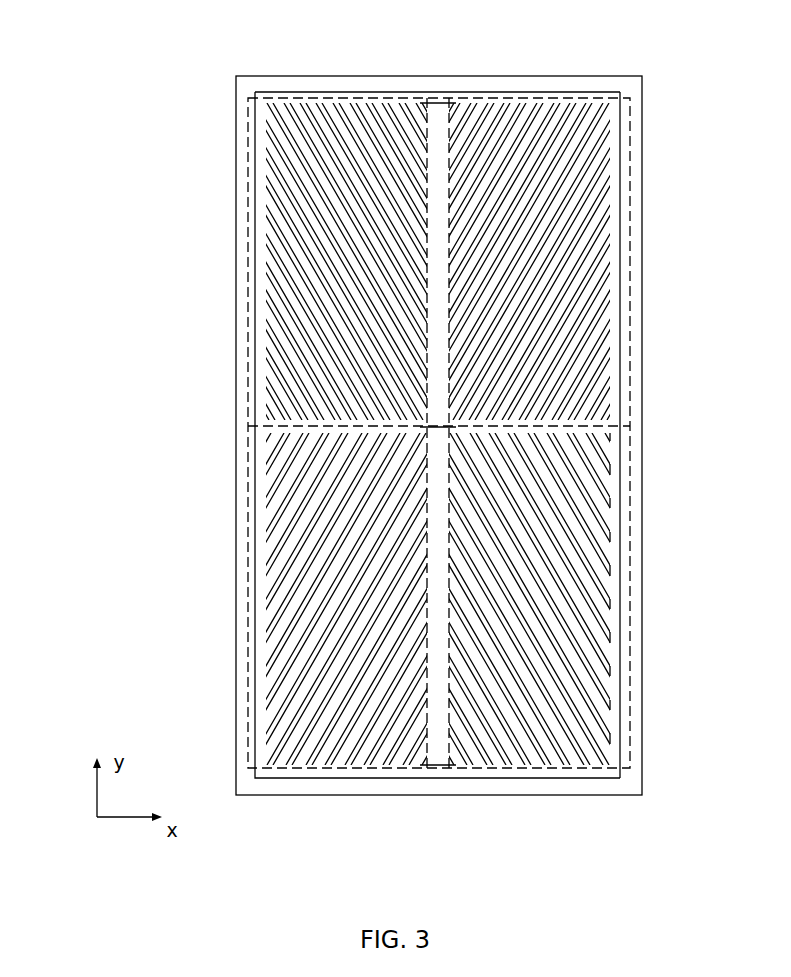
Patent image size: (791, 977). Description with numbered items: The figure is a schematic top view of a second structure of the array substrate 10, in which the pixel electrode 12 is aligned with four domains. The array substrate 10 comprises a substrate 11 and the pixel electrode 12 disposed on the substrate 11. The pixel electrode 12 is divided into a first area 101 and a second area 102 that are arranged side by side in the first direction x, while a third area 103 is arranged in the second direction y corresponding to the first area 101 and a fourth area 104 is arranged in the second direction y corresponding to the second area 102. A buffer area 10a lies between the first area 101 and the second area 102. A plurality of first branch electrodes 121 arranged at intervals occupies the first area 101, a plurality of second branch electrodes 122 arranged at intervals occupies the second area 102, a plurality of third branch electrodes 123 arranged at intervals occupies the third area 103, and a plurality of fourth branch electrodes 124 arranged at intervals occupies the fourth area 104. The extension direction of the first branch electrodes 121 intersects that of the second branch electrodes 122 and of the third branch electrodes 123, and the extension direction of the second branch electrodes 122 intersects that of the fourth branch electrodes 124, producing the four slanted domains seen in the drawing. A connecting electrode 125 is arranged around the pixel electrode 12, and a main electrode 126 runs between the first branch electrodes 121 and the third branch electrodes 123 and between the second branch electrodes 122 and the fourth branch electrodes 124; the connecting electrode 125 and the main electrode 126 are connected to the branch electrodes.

The array substrate 10 is at (178, 60).
The buffer area 10a is at (430, 427).
The substrate 11 is at (633, 360).
The pixel electrode 12 is at (483, 46).
The first branch electrodes 121 is at (405, 105).
The second branch electrodes 122 is at (482, 107).
The third branch electrodes 123 is at (397, 764).
The fourth branch electrodes 124 is at (468, 766).
The connecting electrode 125 is at (610, 514).
The main electrode 126 is at (577, 420).
The first area 101 is at (250, 262).
The second area 102 is at (628, 268).
The third area 103 is at (244, 658).
The fourth area 104 is at (628, 650).